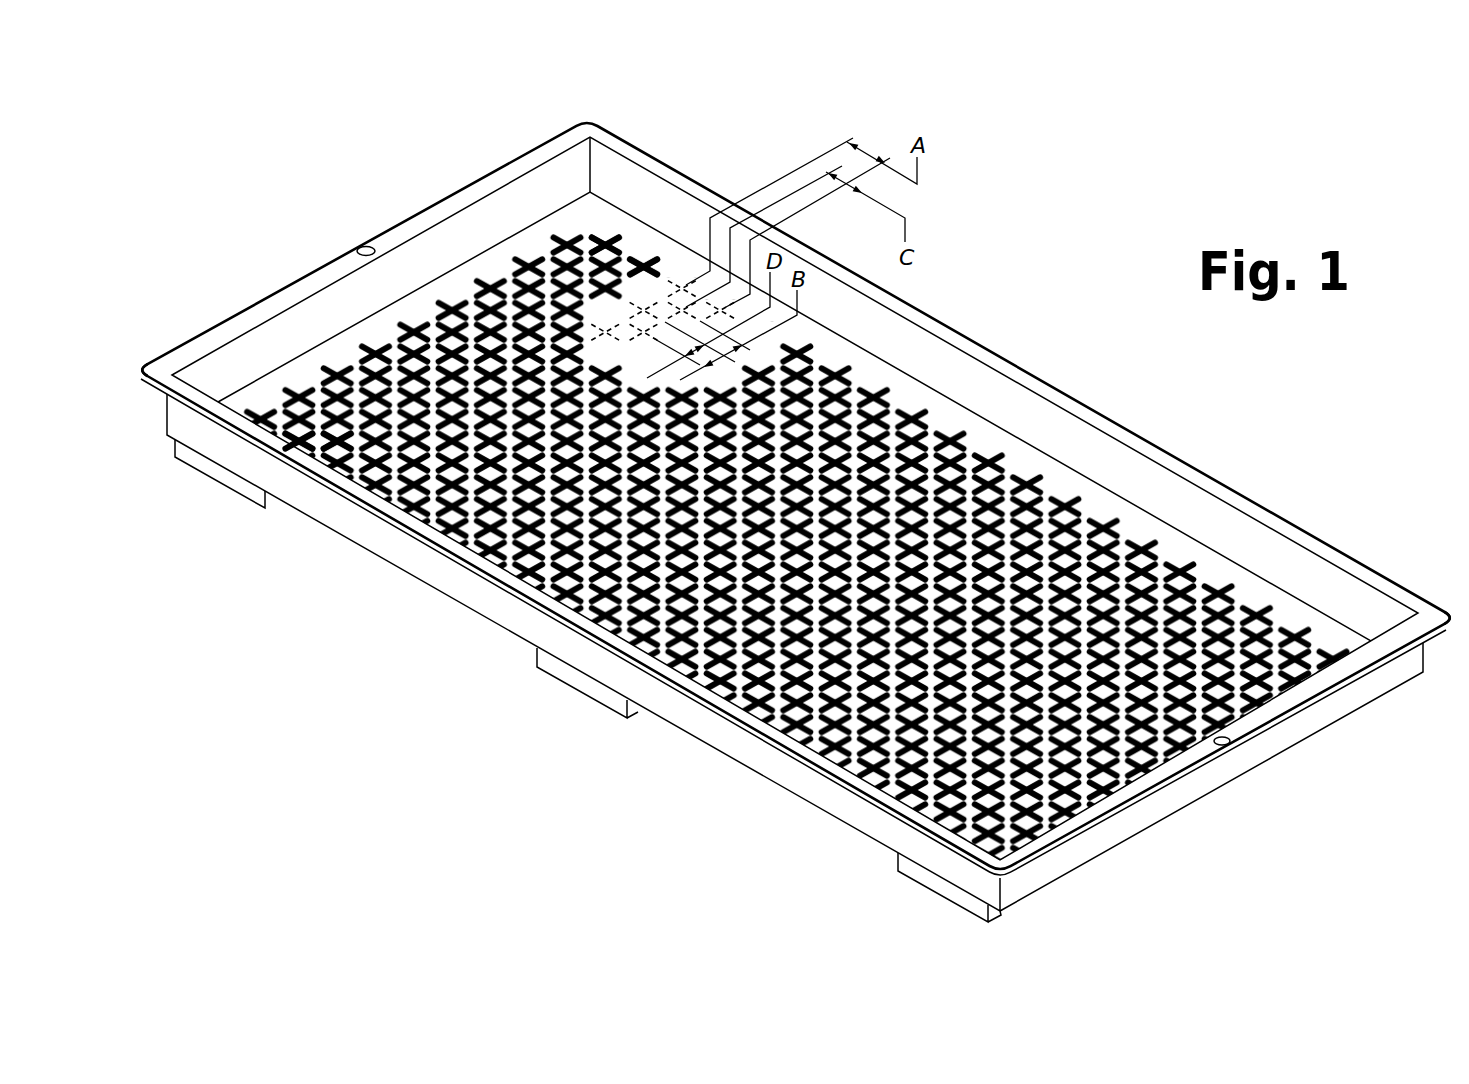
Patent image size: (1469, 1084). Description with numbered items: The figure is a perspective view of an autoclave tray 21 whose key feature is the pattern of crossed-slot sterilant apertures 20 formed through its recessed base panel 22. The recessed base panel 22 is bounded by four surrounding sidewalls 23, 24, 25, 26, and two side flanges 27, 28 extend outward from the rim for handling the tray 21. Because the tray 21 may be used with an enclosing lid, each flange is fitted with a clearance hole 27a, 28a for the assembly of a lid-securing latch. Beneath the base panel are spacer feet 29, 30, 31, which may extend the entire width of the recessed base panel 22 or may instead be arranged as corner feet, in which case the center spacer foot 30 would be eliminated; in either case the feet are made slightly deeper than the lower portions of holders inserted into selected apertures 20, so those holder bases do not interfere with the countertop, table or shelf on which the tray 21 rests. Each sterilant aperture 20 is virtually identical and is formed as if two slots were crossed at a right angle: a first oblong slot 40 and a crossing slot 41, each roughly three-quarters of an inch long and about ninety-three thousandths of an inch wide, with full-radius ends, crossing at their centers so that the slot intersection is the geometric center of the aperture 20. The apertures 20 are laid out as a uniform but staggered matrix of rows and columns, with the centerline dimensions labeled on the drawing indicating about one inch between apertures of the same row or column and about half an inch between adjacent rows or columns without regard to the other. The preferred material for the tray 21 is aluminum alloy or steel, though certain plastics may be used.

The sterilant apertures 20 is at (605, 237).
The tray 21 is at (1000, 266).
The recessed base panel 22 is at (1280, 622).
The sidewall 23 is at (773, 763).
The sidewall 24 is at (447, 238).
The sidewall 25 is at (1085, 438).
The sidewall 26 is at (1050, 875).
The side flange 27 is at (172, 355).
The clearance hole 27a is at (365, 243).
The side flange 28 is at (1430, 622).
The clearance hole 28a is at (1233, 735).
The spacer foot 29 is at (183, 457).
The center spacer foot 30 is at (562, 670).
The spacer foot 31 is at (943, 892).
The first oblong slot 40 is at (598, 237).
The crossing slot 41 is at (645, 265).